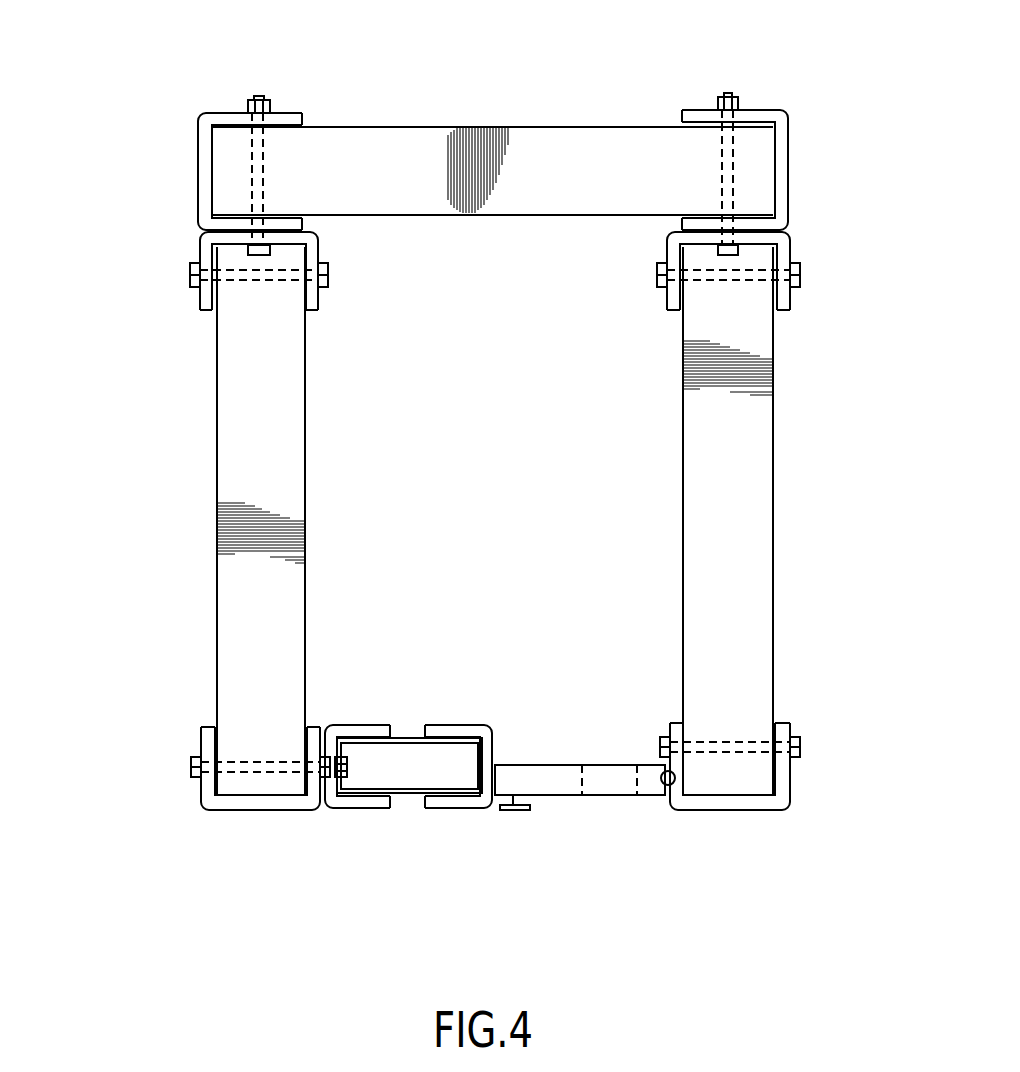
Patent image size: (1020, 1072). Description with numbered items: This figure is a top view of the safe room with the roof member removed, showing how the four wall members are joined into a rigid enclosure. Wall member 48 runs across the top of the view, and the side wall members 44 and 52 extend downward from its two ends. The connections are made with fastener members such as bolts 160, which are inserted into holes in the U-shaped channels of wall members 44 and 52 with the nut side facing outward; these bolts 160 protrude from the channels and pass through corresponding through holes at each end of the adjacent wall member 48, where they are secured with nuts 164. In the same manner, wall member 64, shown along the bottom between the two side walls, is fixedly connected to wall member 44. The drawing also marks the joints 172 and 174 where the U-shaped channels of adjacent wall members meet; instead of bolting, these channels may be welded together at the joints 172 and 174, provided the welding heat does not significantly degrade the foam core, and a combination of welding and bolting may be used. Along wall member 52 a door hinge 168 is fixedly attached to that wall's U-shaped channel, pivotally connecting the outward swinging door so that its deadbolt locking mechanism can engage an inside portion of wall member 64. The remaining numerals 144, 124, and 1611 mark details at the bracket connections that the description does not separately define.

The wall member 48 is at (555, 127).
The wall member 44 is at (217, 464).
The wall member 52 is at (773, 470).
The wall member 64 is at (405, 795).
The upper left bracket 144 is at (320, 225).
The joint 174 is at (682, 220).
The joint 172 is at (185, 231).
The bolt 160 is at (264, 176).
The bolt 124 is at (245, 283).
The nut 164 is at (740, 103).
The nut 1611 is at (244, 108).
The door hinge 168 is at (668, 786).